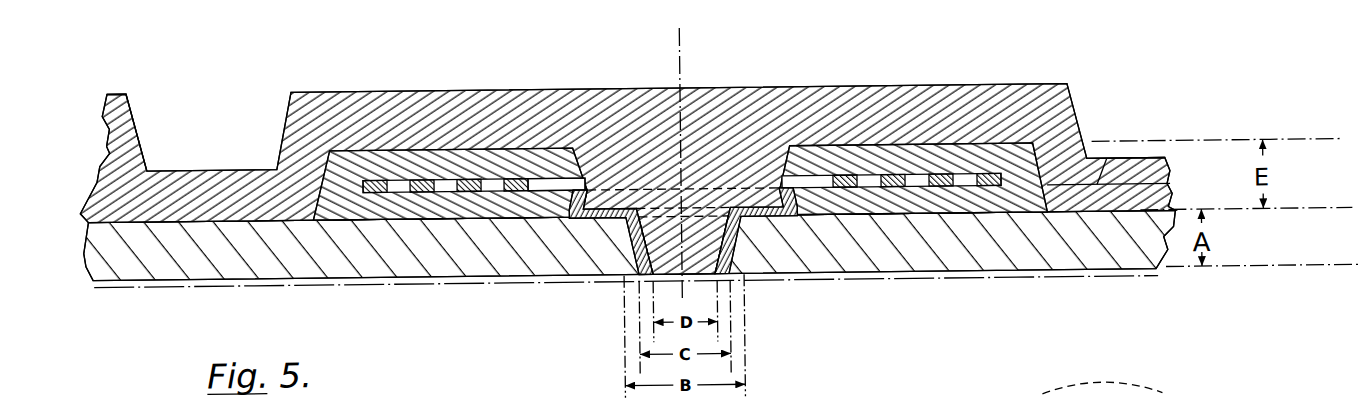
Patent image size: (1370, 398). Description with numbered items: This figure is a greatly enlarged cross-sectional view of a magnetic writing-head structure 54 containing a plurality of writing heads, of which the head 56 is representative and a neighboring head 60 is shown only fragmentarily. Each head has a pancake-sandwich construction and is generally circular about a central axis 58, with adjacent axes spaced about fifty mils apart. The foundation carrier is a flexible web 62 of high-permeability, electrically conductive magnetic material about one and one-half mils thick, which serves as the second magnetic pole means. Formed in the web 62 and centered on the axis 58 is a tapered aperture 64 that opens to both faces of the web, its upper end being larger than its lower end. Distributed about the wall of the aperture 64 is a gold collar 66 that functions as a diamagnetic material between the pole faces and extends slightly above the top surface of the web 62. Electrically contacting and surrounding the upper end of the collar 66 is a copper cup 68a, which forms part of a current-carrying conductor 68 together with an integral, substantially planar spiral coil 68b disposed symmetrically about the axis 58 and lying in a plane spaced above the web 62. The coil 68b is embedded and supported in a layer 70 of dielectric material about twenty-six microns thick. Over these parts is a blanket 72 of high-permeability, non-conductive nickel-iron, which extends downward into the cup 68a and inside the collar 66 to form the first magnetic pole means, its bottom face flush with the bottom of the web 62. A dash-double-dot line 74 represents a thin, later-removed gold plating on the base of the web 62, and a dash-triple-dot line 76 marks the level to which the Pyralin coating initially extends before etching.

The magnetic writing-head structure 54 is at (1134, 297).
The writing head 56 is at (660, 178).
The central axis 58 is at (681, 54).
The adjacent head 60 is at (145, 100).
The flexible web 62 is at (998, 262).
The tapered aperture 64 is at (628, 274).
The gold collar 66 is at (742, 275).
The current-carrying conductor 68 is at (530, 191).
The copper cup 68a is at (580, 221).
The spiral coil 68b is at (428, 190).
The dielectric layer 70 is at (413, 150).
The blanket 72 is at (577, 102).
The gold plating 74 is at (855, 280).
The Pyralin coating level 76 is at (1112, 160).